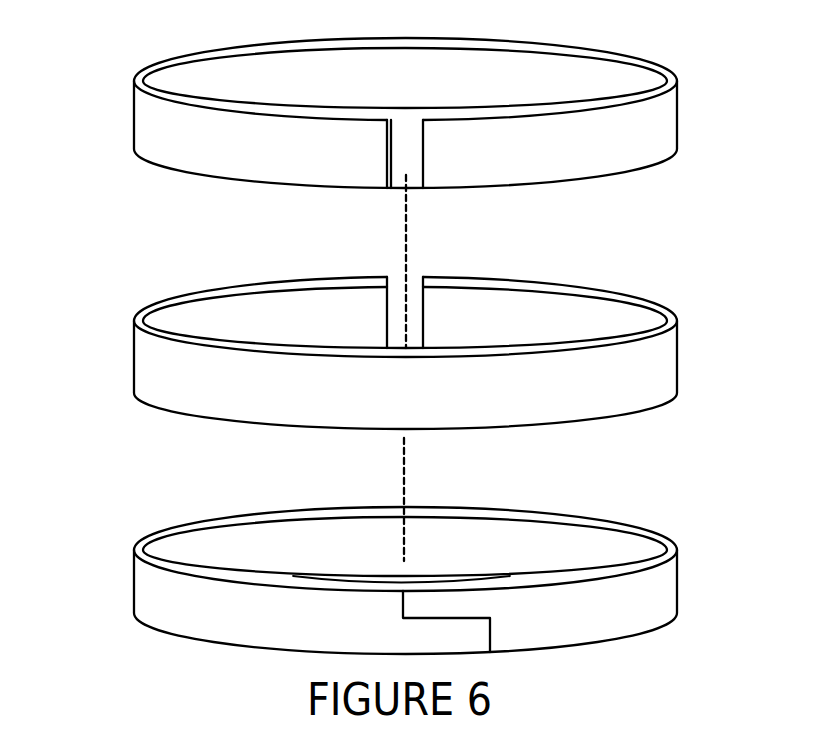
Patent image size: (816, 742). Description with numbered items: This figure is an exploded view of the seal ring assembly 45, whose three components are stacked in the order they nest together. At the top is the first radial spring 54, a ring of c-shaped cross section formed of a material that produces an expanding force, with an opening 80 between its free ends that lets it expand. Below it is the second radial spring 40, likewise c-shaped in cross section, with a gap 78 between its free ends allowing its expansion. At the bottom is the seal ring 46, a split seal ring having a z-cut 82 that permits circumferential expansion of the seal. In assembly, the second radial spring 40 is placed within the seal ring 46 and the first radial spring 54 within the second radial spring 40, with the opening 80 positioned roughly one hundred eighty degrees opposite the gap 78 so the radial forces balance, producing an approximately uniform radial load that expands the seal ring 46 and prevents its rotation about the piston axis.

The seal ring assembly 45 is at (95, 246).
The first radial spring 54 is at (677, 123).
The opening 80 is at (405, 130).
The second radial spring 40 is at (677, 346).
The gap 78 is at (393, 292).
The seal ring 46 is at (677, 577).
The z-cut 82 is at (405, 590).